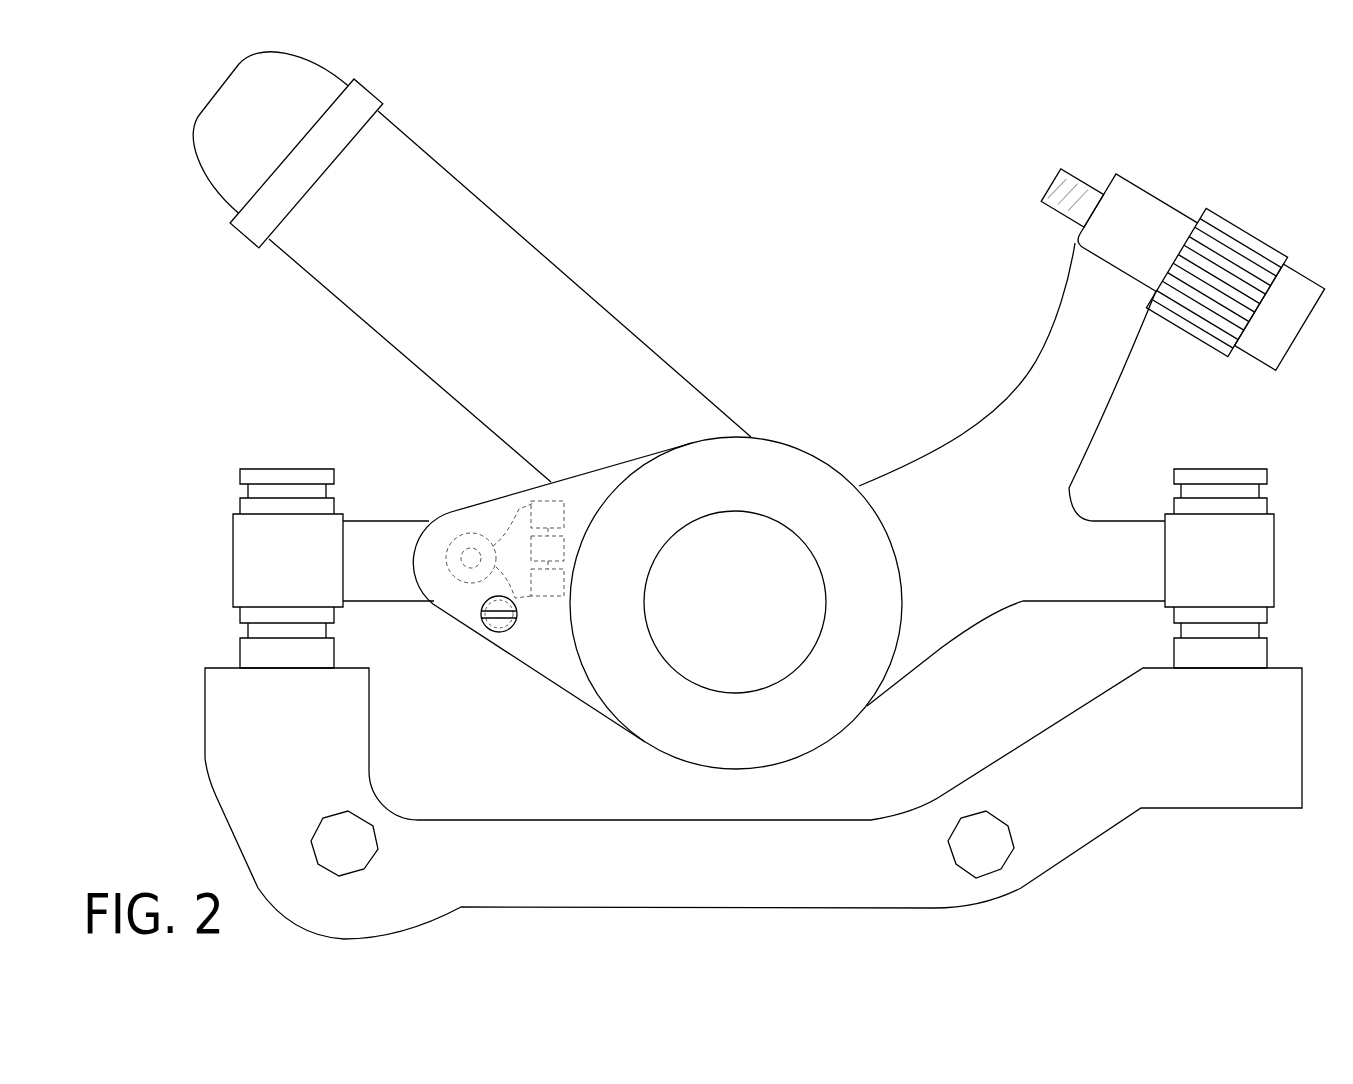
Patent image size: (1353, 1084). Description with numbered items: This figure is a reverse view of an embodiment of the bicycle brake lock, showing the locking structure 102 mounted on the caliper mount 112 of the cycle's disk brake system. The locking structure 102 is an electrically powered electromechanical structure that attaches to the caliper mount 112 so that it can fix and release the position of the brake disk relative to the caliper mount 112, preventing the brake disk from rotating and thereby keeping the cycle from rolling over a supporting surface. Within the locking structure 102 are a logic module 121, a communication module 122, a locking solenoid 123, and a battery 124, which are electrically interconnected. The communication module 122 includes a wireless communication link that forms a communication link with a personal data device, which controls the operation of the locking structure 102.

The locking structure 102 is at (378, 418).
The caliper mount 112 is at (627, 328).
The logic module 121 is at (563, 547).
The communication module 122 is at (563, 582).
The locking solenoid 123 is at (533, 501).
The battery 124 is at (498, 618).